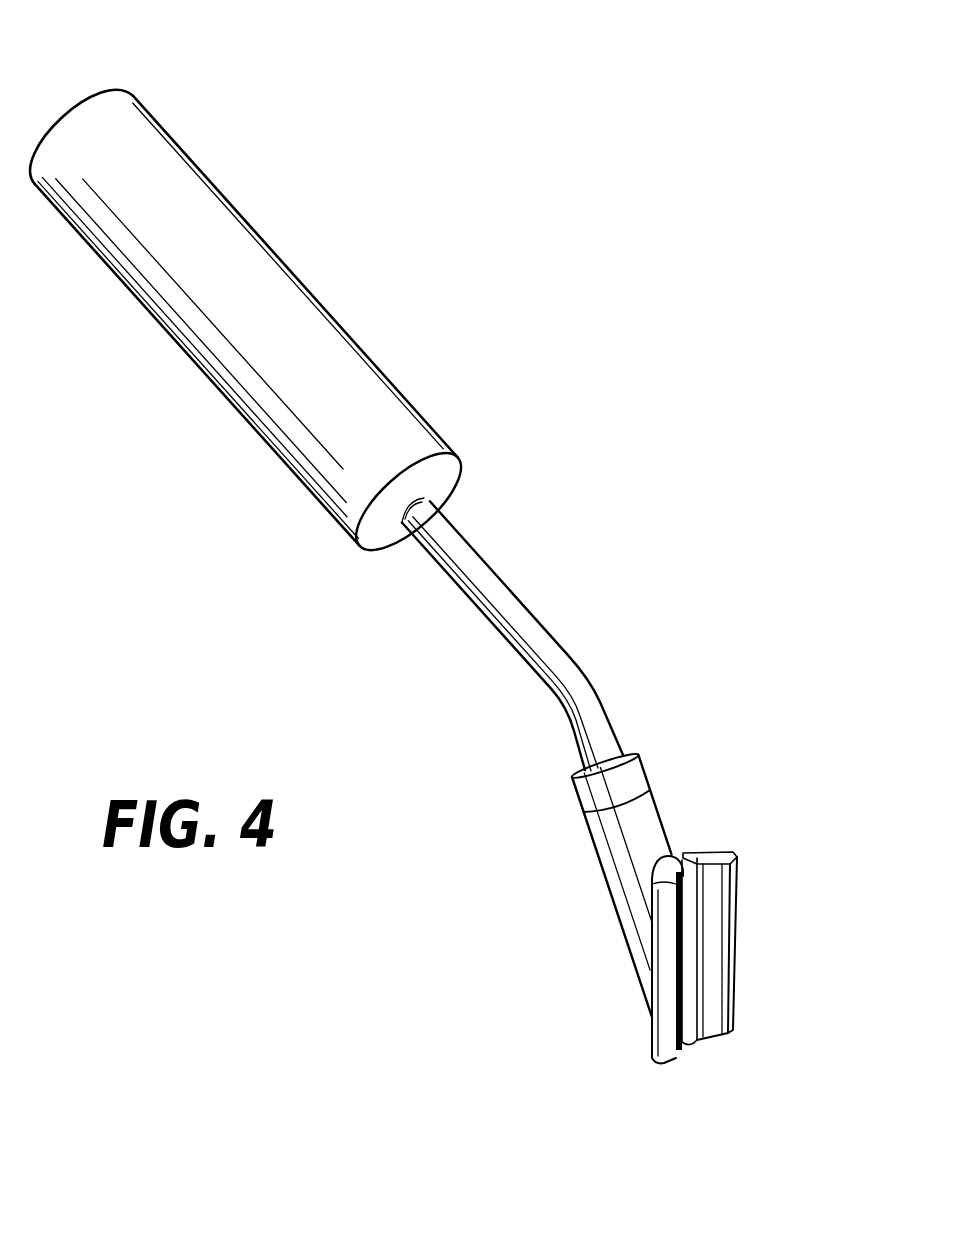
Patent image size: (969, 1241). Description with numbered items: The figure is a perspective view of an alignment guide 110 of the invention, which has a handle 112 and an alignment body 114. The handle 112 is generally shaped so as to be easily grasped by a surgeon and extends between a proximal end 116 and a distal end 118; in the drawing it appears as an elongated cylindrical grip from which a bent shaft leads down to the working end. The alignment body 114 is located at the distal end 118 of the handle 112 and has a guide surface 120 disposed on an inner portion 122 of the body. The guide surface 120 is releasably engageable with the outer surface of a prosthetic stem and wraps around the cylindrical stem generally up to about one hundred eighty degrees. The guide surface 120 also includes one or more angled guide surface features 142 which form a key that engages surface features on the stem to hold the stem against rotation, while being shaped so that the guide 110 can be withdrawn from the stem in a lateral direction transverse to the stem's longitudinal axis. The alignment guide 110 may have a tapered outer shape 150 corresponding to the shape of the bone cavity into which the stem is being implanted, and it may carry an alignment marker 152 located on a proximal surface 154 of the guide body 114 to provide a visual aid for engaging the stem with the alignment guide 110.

The alignment guide 110 is at (552, 299).
The handle 112 is at (292, 268).
The alignment body 114 is at (653, 905).
The proximal end 116 is at (113, 97).
The distal end 118 is at (641, 758).
The guide surface 120 is at (713, 907).
The inner portion 122 is at (730, 981).
The angled guide surface features 142 is at (702, 872).
The tapered outer shape 150 is at (577, 934).
The alignment marker 152 is at (653, 875).
The proximal surface 154 is at (679, 876).